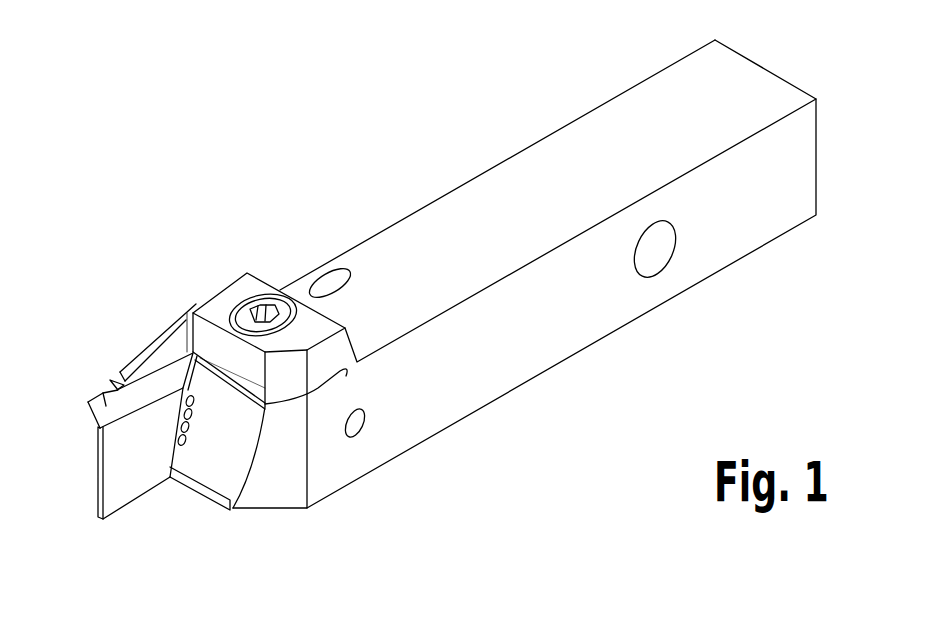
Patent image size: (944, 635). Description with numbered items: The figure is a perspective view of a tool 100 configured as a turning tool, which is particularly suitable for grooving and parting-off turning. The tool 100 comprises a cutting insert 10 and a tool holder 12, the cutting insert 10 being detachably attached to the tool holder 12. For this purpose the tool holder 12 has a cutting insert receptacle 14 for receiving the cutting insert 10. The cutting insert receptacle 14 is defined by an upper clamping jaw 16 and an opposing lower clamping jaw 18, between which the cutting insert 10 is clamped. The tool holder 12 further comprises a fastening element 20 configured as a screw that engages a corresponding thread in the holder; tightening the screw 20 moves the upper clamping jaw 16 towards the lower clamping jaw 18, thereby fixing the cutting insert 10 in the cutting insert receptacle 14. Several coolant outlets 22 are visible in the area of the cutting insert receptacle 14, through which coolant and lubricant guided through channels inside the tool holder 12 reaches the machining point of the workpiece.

The tool 100 is at (419, 286).
The cutting insert 10 is at (87, 352).
The tool holder 12 is at (524, 274).
The cutting insert receptacle 14 is at (165, 459).
The upper clamping jaw 16 is at (233, 379).
The lower clamping jaw 18 is at (96, 473).
The fastening element 20 is at (263, 276).
The coolant outlets 22 is at (245, 477).